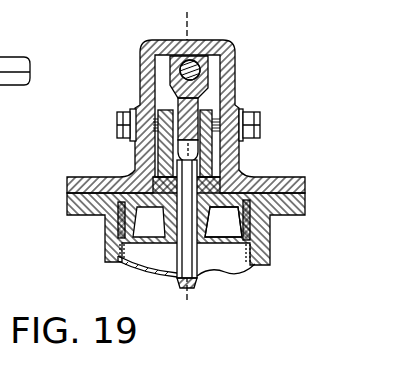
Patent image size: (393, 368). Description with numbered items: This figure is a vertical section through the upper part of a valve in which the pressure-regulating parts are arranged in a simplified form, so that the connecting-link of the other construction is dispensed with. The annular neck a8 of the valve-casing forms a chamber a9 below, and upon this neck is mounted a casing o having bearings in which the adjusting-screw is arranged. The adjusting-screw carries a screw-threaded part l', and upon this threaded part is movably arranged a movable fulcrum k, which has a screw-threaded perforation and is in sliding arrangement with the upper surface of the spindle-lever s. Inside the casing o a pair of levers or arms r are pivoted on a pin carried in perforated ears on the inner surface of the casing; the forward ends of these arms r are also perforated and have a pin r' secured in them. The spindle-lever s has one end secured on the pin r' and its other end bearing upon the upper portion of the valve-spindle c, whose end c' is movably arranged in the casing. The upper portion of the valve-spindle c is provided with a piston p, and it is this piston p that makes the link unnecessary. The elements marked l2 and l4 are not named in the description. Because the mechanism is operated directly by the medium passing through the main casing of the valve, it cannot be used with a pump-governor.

The lever l2 is at (26, 62).
The lever arm l4 is at (0, 48).
The casing o is at (163, 40).
The screw-threaded part l' is at (223, 64).
The movable fulcrum k is at (203, 88).
The spindle-lever s is at (176, 105).
The levers or arms r is at (190, 133).
The pin r' is at (266, 125).
The end of valve-spindle c' is at (228, 151).
The valve-spindle c is at (216, 232).
The piston p is at (232, 208).
The annular neck a8 is at (287, 247).
The chamber a9 is at (163, 258).